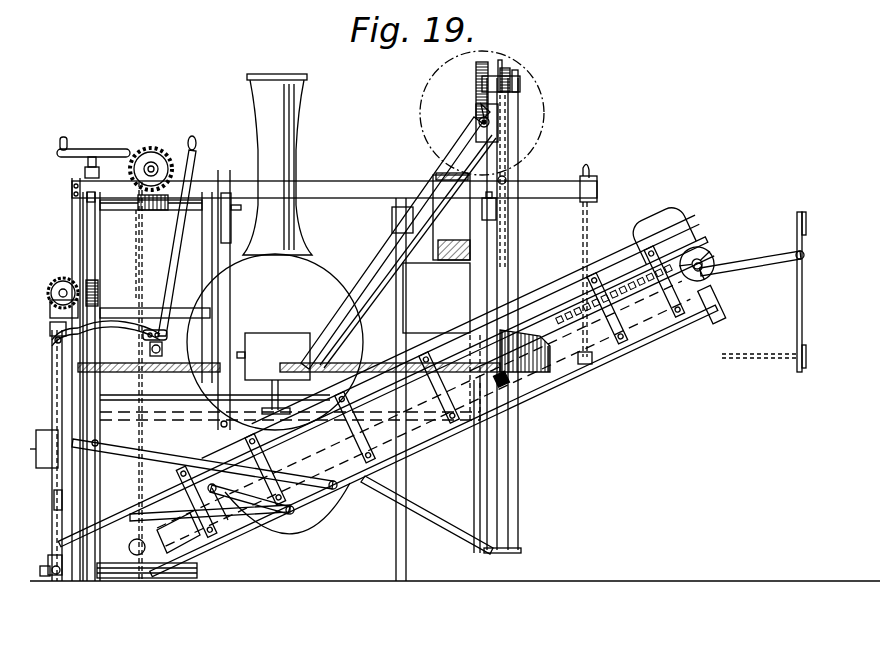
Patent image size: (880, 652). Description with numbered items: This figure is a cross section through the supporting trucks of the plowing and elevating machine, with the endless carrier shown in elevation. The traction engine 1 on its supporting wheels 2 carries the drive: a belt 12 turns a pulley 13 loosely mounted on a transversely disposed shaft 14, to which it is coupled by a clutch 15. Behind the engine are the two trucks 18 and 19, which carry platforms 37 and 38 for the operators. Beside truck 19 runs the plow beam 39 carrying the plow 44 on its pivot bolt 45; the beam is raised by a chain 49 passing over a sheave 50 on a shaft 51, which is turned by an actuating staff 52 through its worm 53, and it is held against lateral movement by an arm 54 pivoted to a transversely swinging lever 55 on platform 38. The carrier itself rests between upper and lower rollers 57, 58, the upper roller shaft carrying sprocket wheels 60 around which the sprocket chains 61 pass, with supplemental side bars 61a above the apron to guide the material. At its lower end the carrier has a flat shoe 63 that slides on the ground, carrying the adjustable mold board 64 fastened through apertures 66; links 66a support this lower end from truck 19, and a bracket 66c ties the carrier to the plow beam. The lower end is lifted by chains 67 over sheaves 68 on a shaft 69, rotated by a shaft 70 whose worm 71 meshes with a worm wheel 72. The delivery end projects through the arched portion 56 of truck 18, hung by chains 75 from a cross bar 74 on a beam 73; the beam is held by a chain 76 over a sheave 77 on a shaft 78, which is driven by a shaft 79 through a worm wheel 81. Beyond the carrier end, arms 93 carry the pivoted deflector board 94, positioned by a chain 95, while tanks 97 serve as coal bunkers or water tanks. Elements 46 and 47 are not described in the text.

The traction engine 1 is at (275, 304).
The supporting wheels 2 is at (455, 389).
The belt 12 is at (458, 222).
The pulley 13 is at (428, 190).
The transversely disposed shaft 14 is at (489, 210).
The clutch 15 is at (426, 247).
The truck 18 is at (440, 449).
The truck 19 is at (72, 393).
The platform 37 is at (402, 358).
The platform 38 is at (140, 336).
The plow beam 39 is at (55, 500).
The plow 44 is at (54, 576).
The pivot bolt 45 is at (56, 432).
The roller foot 46 is at (60, 578).
The link bar 47 is at (62, 462).
The chain 49 is at (380, 386).
The sheave 50 is at (64, 278).
The shaft 51 is at (78, 288).
The actuating staff 52 is at (100, 170).
The worm 53 is at (92, 291).
The arm 54 is at (55, 338).
The transversely swinging lever 55 is at (193, 146).
The arched portion 56 is at (516, 103).
The upper roller 57 is at (704, 265).
The lower roller 58 is at (141, 556).
The sprocket wheels 60 is at (682, 226).
The sprocket chains 61 is at (595, 254).
The supplemental side bars 61a is at (637, 206).
The shoe 63 is at (192, 580).
The mold board 64 is at (407, 415).
The apertures 66 is at (134, 560).
The links 66a is at (256, 480).
The bracket 66c is at (228, 522).
The chains 67 is at (138, 233).
The sheaves 68 is at (152, 160).
The shaft 69 is at (140, 165).
The shaft 70 is at (100, 212).
The worm 71 is at (156, 210).
The worm wheel 72 is at (170, 162).
The beam 73 is at (332, 190).
The cross bar 74 is at (589, 174).
The chains 75 is at (581, 260).
The chain 76 is at (504, 127).
The sheave 77 is at (508, 84).
The shaft 78 is at (522, 92).
The shaft 79 is at (473, 118).
The worm wheel 81 is at (477, 74).
The arms 93 is at (773, 268).
The deflector board 94 is at (797, 206).
The chain 95 is at (757, 360).
The tanks 97 is at (180, 264).